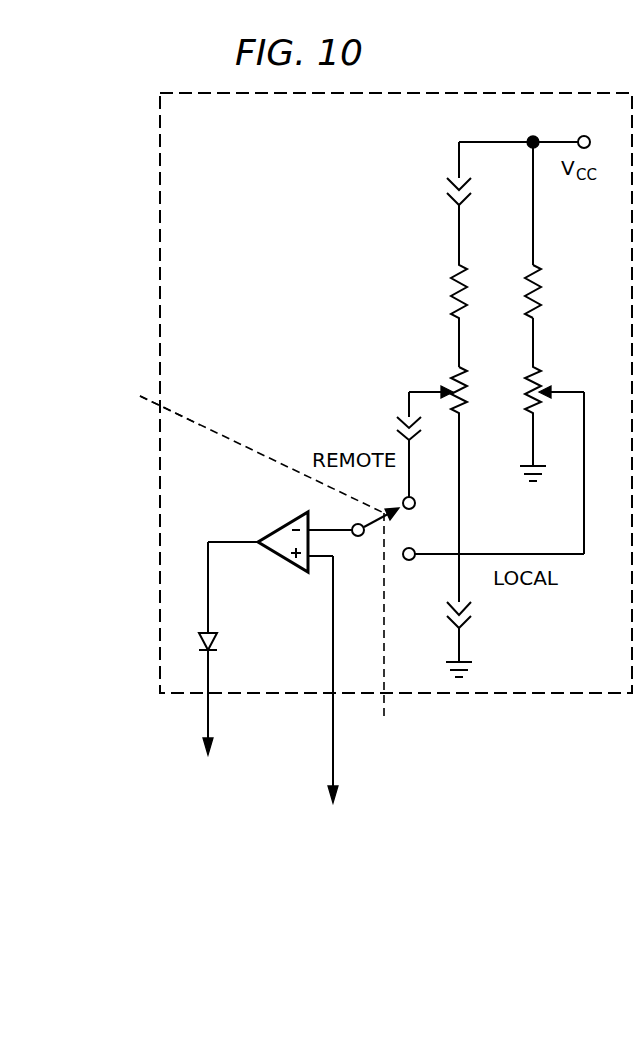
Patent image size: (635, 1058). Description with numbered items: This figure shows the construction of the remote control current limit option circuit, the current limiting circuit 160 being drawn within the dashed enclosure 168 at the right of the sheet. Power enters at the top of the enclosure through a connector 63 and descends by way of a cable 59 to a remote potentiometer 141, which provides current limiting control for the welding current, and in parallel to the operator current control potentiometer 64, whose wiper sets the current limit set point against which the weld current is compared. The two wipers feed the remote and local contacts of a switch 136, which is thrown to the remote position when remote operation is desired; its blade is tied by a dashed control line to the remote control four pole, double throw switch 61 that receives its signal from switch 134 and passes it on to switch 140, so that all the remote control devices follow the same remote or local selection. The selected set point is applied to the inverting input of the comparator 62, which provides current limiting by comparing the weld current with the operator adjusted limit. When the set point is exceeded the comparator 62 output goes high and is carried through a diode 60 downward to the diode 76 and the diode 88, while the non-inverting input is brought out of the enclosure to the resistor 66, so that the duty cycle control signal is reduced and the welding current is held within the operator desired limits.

The current limiting circuit 160 is at (370, 393).
The remote control current limit option circuit 168 is at (159, 170).
The connector 63 is at (453, 190).
The cable 59 is at (459, 252).
The remote potentiometer 141 is at (452, 378).
The potentiometer 64 is at (538, 377).
The switch 61 is at (232, 440).
The comparator 62 is at (278, 530).
The switch 136 is at (392, 520).
The diode 60 is at (218, 642).
The switch 134 is at (139, 392).
The switch 140 is at (392, 729).
The diode 76 is at (209, 750).
The diode 88 is at (209, 750).
The resistor 66 is at (330, 707).